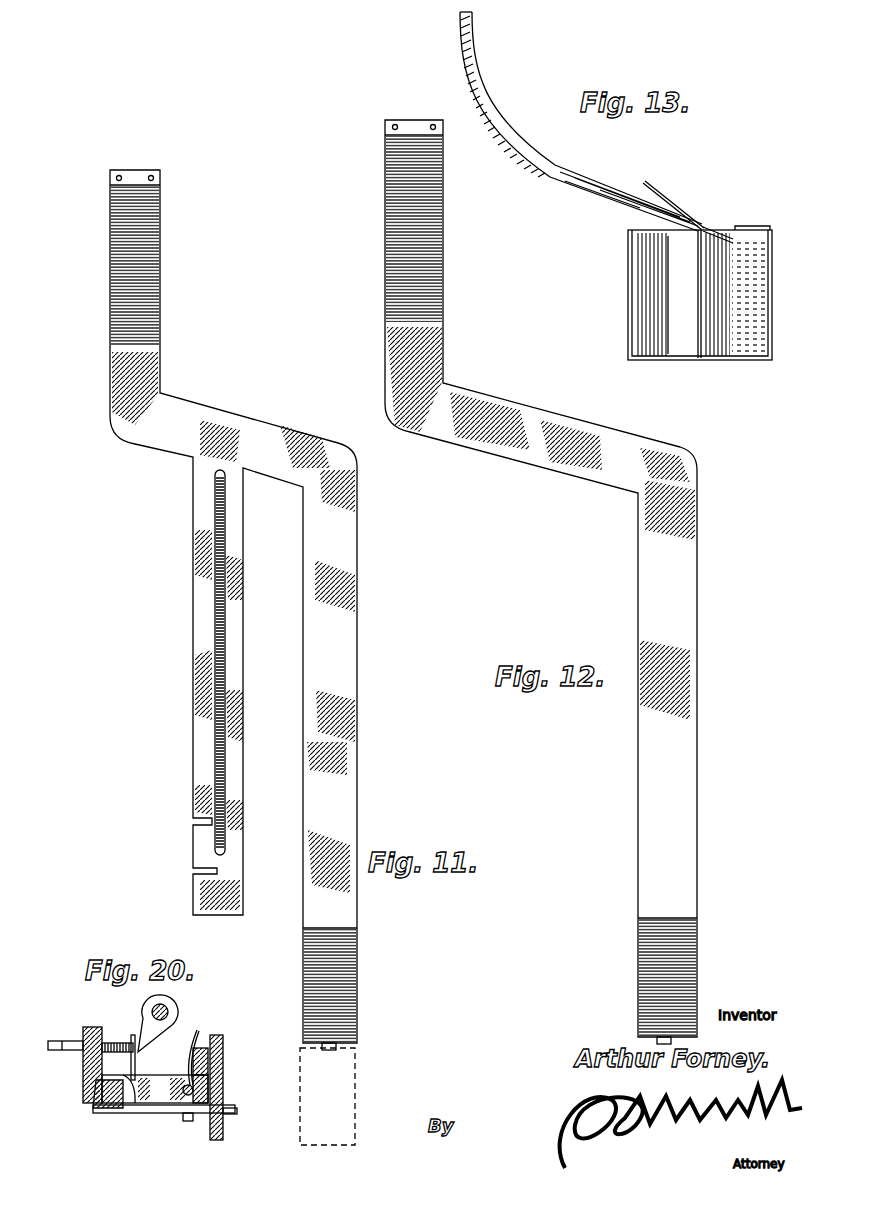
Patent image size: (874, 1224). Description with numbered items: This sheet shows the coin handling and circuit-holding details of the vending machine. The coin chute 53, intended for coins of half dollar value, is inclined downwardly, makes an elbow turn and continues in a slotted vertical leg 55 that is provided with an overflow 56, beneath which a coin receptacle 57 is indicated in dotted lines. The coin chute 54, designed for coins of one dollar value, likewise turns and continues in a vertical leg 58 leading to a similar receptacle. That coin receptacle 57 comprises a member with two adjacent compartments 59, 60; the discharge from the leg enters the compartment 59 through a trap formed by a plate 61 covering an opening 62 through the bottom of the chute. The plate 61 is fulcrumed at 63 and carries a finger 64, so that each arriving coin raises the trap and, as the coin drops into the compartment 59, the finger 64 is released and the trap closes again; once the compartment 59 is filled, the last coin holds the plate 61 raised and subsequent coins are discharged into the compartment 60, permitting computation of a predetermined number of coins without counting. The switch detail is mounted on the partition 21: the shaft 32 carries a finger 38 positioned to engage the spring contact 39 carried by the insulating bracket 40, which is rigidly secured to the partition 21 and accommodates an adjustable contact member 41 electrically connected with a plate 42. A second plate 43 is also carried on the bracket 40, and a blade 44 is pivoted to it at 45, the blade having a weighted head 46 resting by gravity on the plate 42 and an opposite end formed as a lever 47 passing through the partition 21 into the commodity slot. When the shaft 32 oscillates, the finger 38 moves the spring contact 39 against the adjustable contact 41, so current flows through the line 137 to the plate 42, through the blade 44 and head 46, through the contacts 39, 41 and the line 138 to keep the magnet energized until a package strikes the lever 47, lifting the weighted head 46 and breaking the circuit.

In FIG. 11, the coin chute 53 is at (160, 305).
In FIG. 12, the coin chute 54 is at (443, 283).
In FIG. 11, the vertical leg 55 is at (243, 621).
In FIG. 11, the overflow 56 is at (343, 524).
In FIG. 11, the coin receptacle 57 is at (352, 1088).
In FIG. 13, the coin receptacle 57 is at (630, 296).
In FIG. 12, the vertical leg 58 is at (686, 735).
In FIG. 13, the vertical leg 58 is at (489, 118).
In FIG. 13, the compartment 59 is at (772, 232).
In FIG. 13, the compartment 60 is at (668, 252).
In FIG. 13, the plate 61 is at (700, 195).
In FIG. 13, the opening 62 is at (642, 224).
In FIG. 13, the fulcrum 63 is at (703, 230).
In FIG. 13, the finger 64 is at (728, 236).
In FIG. 20, the partition 21 is at (240, 1087).
In FIG. 20, the shaft 32 is at (168, 1005).
In FIG. 20, the finger 38 is at (160, 1025).
In FIG. 20, the spring contact 39 is at (135, 1060).
In FIG. 20, the bracket 40 is at (86, 1075).
In FIG. 20, the adjustable contact member 41 is at (118, 1043).
In FIG. 20, the plate 42 is at (130, 1103).
In FIG. 20, the second plate 43 is at (178, 1103).
In FIG. 20, the blade 44 is at (160, 1113).
In FIG. 20, the pivot 45 is at (190, 1121).
In FIG. 20, the weighted head 46 is at (108, 1100).
In FIG. 20, the lever 47 is at (237, 1111).
In FIG. 20, the line 137 is at (186, 1050).
In FIG. 20, the line 138 is at (45, 1046).